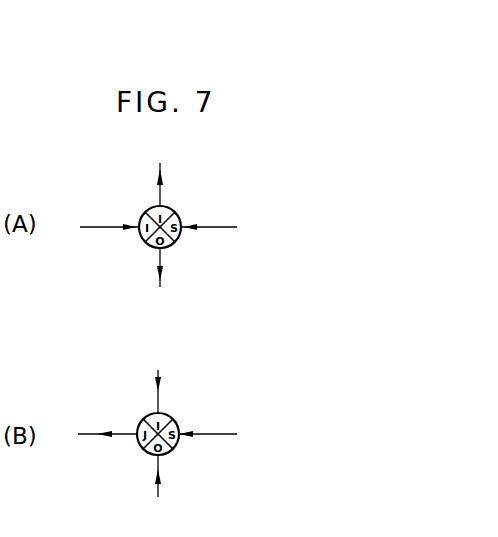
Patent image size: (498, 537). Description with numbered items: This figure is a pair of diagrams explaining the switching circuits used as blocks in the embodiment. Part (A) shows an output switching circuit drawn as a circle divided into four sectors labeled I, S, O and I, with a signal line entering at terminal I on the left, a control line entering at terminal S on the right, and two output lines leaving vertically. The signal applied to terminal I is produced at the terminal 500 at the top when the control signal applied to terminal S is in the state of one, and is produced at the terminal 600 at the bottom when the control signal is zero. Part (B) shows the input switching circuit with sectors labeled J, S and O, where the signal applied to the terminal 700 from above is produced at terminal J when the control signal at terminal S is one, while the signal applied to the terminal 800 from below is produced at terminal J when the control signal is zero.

The terminal 500 is at (163, 167).
The terminal 600 is at (163, 284).
The terminal 700 is at (160, 398).
The terminal 800 is at (161, 466).